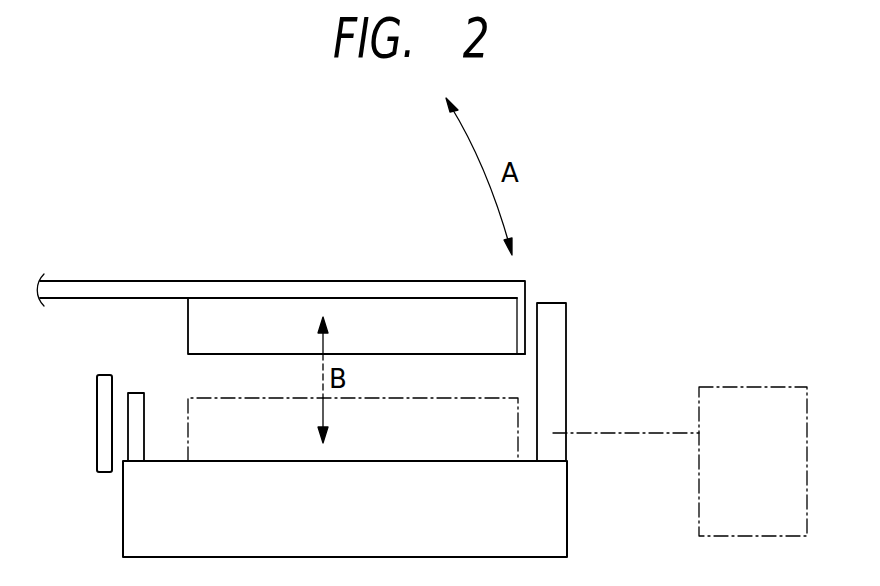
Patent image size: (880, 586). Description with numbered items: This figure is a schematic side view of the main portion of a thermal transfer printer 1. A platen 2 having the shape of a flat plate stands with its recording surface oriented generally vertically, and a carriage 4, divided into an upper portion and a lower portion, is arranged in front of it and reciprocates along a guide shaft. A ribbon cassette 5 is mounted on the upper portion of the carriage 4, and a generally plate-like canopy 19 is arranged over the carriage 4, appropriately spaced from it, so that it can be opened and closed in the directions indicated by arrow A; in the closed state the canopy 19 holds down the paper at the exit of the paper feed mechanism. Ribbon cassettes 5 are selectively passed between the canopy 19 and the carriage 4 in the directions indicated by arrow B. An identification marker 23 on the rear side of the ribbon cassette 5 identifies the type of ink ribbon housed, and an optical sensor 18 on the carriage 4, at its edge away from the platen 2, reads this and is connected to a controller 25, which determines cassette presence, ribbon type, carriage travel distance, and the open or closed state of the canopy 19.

The thermal transfer printer 1 is at (678, 320).
The platen 2 is at (100, 436).
The carriage 4 is at (556, 531).
The ribbon cassette 5 is at (200, 327).
The optical sensor 18 is at (556, 393).
The canopy 19 is at (286, 287).
The identification marker 23 is at (522, 308).
The controller 25 is at (738, 467).